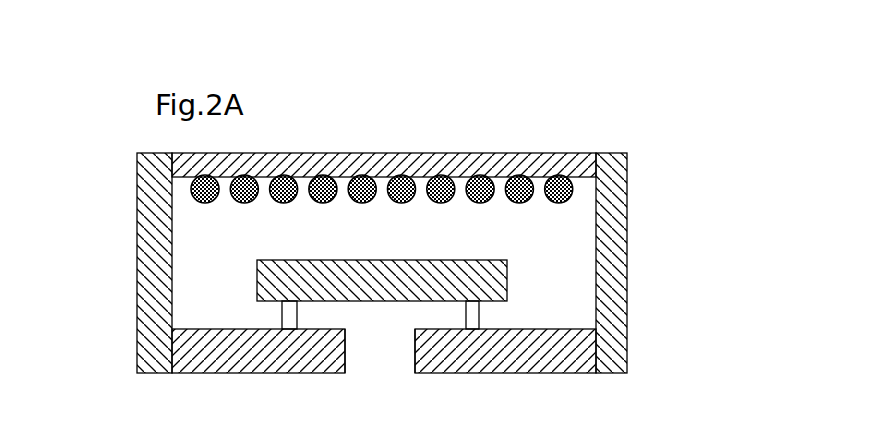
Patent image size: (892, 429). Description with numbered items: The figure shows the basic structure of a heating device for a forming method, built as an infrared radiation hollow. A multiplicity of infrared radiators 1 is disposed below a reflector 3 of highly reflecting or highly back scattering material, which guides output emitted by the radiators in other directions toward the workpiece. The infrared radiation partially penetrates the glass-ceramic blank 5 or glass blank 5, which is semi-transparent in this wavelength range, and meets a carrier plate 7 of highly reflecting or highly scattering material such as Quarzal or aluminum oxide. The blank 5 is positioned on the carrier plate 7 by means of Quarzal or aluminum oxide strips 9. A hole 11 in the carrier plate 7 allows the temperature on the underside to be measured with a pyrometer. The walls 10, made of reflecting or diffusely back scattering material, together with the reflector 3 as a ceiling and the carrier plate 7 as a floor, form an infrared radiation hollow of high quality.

The infrared radiators 1 is at (575, 188).
The reflector 3 is at (562, 163).
The glass-ceramic blank 5 is at (497, 274).
The carrier plate 7 is at (548, 350).
The strips 9 is at (283, 312).
The walls 10 is at (150, 235).
The hole 11 is at (379, 332).